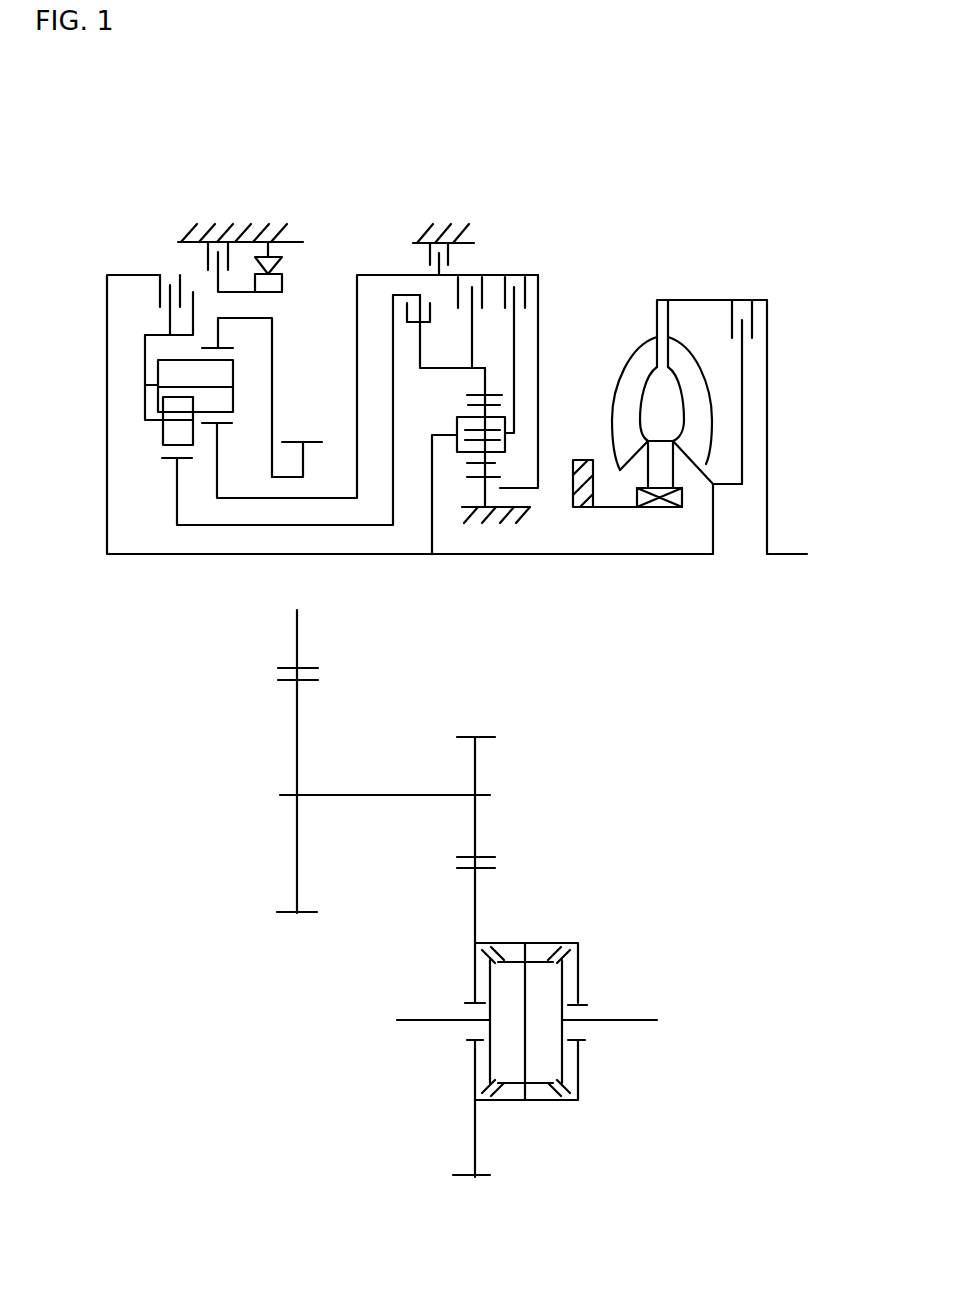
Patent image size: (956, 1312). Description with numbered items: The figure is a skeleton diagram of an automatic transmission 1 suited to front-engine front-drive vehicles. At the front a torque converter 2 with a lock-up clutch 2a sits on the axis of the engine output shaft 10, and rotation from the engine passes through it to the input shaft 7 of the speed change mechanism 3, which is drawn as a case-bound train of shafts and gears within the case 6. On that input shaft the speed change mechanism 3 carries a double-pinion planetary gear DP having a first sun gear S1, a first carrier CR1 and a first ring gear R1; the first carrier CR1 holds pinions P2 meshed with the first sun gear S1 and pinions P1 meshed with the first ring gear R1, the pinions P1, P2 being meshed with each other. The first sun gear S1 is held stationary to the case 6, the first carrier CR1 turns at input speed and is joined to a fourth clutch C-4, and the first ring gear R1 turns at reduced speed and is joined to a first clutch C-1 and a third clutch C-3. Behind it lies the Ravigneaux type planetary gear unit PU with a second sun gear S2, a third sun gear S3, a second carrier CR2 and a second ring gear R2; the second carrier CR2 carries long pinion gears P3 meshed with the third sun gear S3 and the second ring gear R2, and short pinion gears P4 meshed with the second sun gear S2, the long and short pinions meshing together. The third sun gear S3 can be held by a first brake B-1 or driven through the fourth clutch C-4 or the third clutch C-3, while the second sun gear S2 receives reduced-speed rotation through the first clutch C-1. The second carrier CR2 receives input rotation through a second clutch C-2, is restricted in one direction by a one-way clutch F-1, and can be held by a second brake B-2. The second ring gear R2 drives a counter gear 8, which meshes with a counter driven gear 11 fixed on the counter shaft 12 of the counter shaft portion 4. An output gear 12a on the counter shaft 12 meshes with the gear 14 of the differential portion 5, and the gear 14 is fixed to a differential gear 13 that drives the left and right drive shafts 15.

The automatic transmission 1 is at (600, 210).
The torque converter 2 is at (674, 289).
The lock-up clutch 2a is at (742, 330).
The speed change mechanism 3 is at (358, 228).
The counter shaft portion 4 is at (592, 832).
The differential portion 5 is at (614, 930).
The case 6 is at (182, 240).
The input shaft 7 is at (520, 557).
The counter gear 8 is at (318, 442).
The output shaft 10 is at (784, 552).
The counter driven gear 11 is at (298, 713).
The counter shaft 12 is at (378, 797).
The output gear 12a is at (477, 756).
The differential gear 13 is at (548, 1102).
The gear 14 is at (477, 895).
The drive shafts 15 is at (418, 1025).
The planetary gear unit PU is at (107, 337).
The planetary gear DP is at (510, 381).
The first carrier CR1 is at (505, 447).
The second carrier CR2 is at (136, 358).
The first ring gear R1 is at (467, 395).
The second ring gear R2 is at (272, 331).
The first sun gear S1 is at (470, 478).
The second sun gear S2 is at (175, 460).
The third sun gear S3 is at (222, 425).
The pinions P1 is at (468, 405).
The pinions P2 is at (467, 463).
The long pinion gears P3 is at (233, 385).
The short pinion gears P4 is at (163, 432).
The first clutch C-1 is at (446, 331).
The second clutch C-2 is at (166, 294).
The third clutch C-3 is at (476, 311).
The fourth clutch C-4 is at (522, 343).
The first brake B-1 is at (445, 238).
The second brake B-2 is at (240, 246).
The first one-way clutch F-1 is at (267, 246).